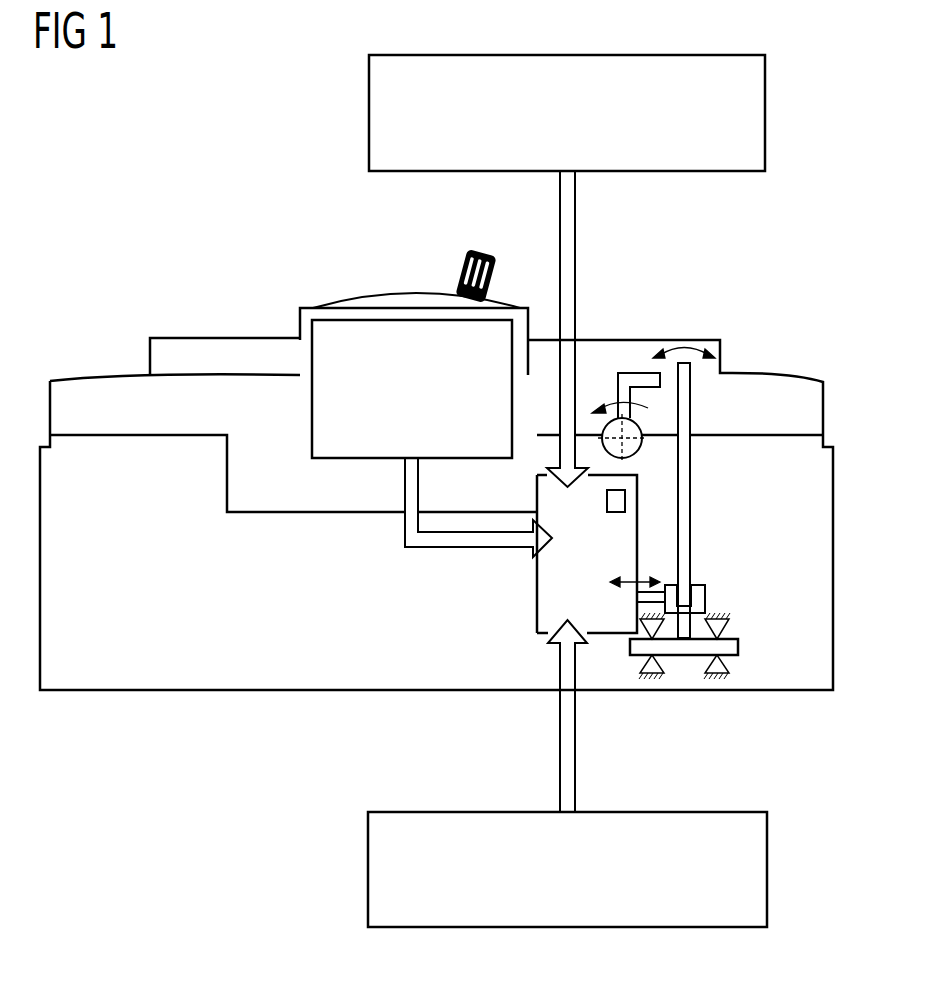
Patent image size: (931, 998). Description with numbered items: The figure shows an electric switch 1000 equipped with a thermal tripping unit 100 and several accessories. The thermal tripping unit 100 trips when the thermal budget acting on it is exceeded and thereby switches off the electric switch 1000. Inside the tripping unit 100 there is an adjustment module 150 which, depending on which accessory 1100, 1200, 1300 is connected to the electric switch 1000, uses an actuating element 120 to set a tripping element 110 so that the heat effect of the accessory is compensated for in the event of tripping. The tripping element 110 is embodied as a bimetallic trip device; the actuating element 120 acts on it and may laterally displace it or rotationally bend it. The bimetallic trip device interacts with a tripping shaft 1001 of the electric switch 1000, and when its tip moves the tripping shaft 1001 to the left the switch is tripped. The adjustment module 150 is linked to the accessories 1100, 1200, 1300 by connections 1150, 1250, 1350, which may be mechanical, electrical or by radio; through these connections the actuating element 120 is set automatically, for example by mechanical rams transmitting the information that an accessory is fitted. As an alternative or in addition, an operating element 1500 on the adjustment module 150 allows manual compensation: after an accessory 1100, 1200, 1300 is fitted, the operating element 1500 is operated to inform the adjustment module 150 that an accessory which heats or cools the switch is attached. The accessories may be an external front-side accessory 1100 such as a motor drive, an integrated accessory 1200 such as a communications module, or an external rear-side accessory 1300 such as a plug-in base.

The thermal tripping unit 100 is at (783, 310).
The tripping element 110 is at (690, 490).
The actuating element 120 is at (705, 597).
The adjustment module 150 is at (537, 590).
The electric switch 1000 is at (92, 372).
The tripping shaft 1001 is at (621, 418).
The accessory 1100 is at (765, 115).
The connection 1150 is at (575, 238).
The accessory 1200 is at (312, 395).
The connection 1250 is at (405, 540).
The accessory 1300 is at (767, 870).
The connection 1350 is at (575, 750).
The operating element 1500 is at (612, 513).